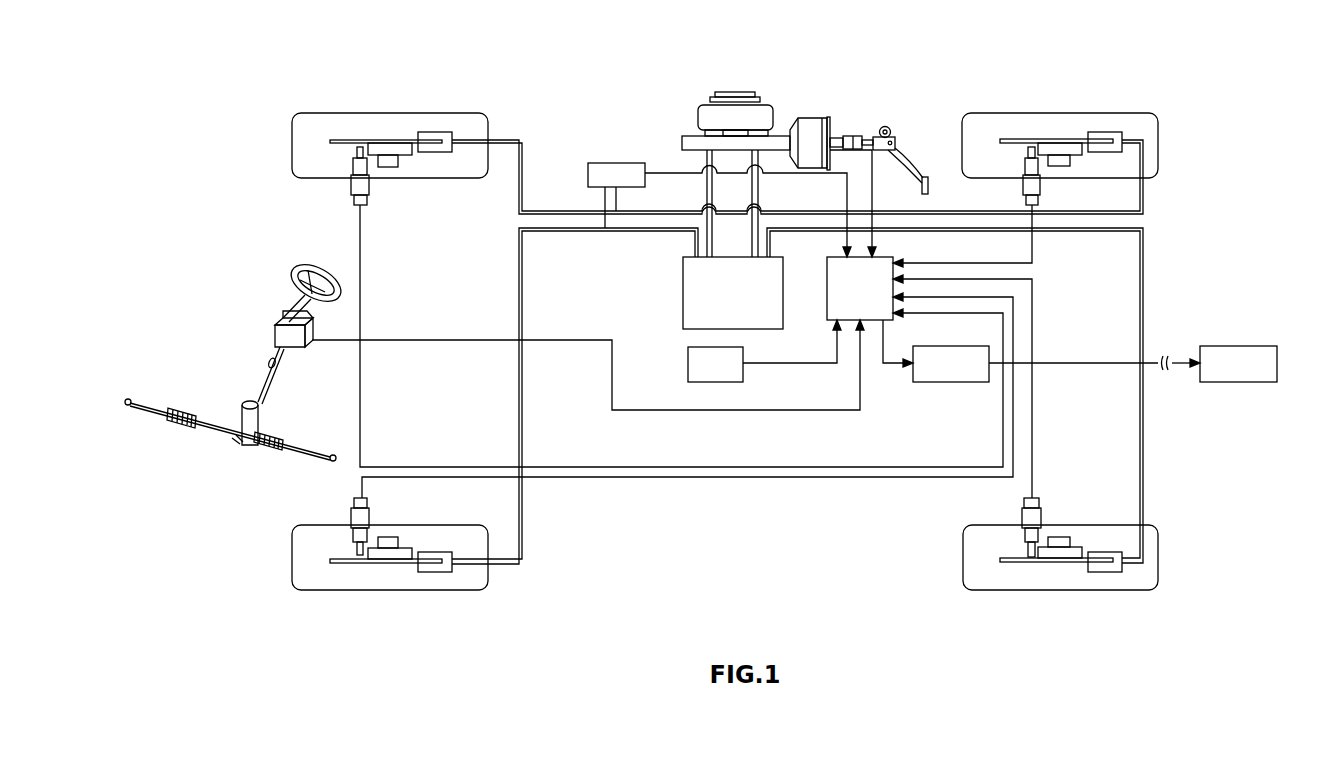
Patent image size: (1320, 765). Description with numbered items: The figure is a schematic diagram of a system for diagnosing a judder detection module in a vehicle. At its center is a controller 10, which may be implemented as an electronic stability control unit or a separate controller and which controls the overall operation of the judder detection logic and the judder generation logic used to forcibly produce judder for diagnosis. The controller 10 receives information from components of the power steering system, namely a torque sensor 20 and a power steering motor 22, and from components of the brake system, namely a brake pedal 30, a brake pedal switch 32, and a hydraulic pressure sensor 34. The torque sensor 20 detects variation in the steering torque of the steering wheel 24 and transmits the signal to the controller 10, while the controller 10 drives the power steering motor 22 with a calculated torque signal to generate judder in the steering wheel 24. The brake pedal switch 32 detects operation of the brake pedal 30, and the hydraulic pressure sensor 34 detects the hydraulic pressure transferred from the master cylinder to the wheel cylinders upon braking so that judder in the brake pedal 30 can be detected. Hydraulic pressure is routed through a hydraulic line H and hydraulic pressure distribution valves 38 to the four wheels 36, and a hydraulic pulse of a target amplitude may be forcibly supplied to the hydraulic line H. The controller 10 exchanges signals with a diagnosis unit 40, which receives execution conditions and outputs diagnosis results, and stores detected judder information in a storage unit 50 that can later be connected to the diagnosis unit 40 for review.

The controller 10 is at (893, 253).
The torque sensor 20 is at (236, 352).
The power steering motor 22 is at (275, 330).
The steering wheel 24 is at (293, 270).
The brake pedal 30 is at (903, 160).
The brake pedal switch 32 is at (838, 137).
The hydraulic pressure sensor 34 is at (614, 162).
The wheels 36 is at (392, 111).
The hydraulic pressure distribution valves 38 is at (683, 295).
The diagnosis unit 40 is at (950, 383).
The storage unit 50 is at (1235, 345).
The hydraulic line H is at (948, 210).